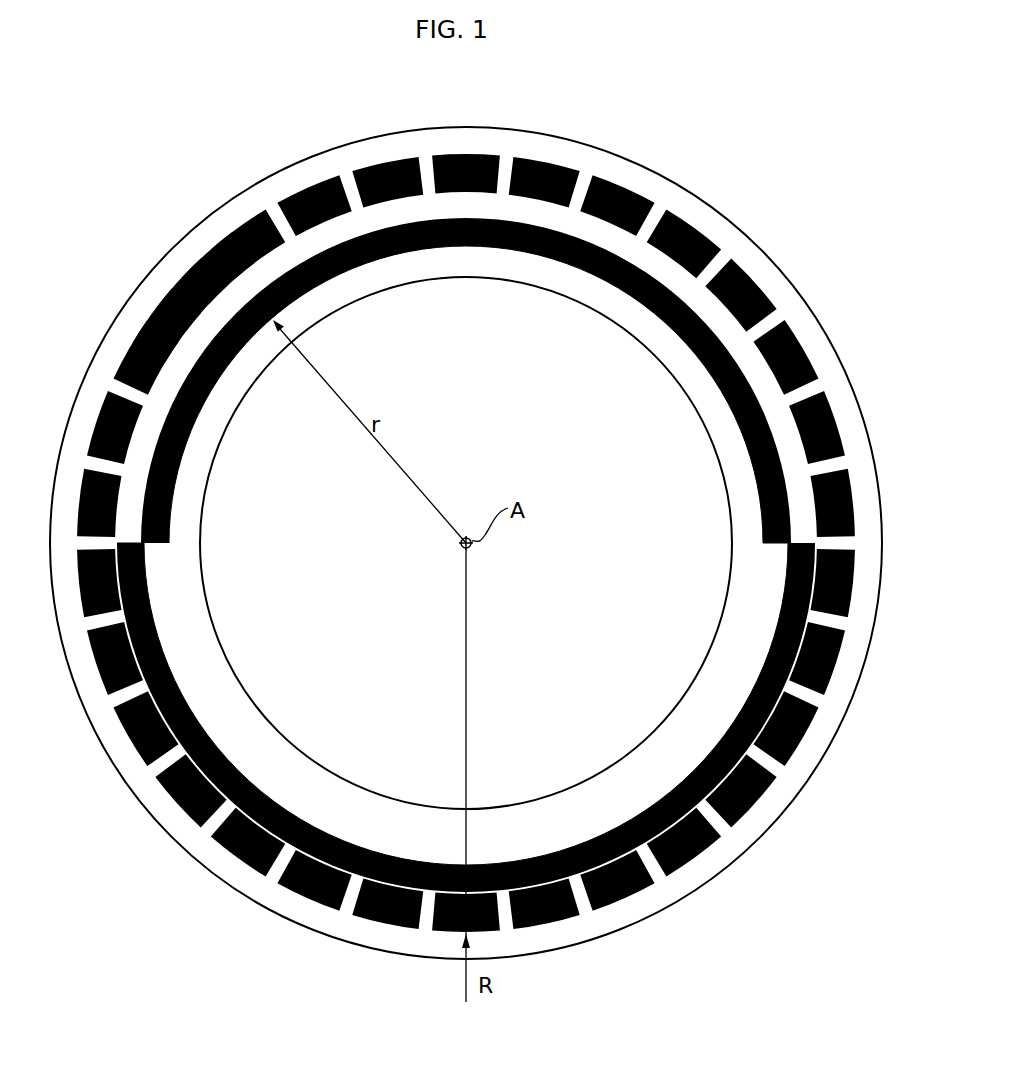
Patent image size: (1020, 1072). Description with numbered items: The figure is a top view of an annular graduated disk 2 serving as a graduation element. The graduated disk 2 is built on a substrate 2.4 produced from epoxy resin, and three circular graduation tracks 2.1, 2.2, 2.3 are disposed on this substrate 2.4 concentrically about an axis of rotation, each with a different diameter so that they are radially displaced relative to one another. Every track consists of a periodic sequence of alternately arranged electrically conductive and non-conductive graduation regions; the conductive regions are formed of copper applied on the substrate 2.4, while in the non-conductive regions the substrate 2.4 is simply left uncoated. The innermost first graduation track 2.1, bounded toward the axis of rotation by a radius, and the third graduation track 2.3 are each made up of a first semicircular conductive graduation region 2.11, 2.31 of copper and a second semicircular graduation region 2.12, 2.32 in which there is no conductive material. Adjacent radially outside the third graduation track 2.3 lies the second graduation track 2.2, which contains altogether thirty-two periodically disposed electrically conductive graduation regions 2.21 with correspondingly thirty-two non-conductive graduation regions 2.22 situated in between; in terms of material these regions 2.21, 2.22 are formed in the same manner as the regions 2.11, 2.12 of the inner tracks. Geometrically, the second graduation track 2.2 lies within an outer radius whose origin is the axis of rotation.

The graduated disk 2 is at (205, 207).
The first graduation track 2.1 is at (757, 541).
The electrically conductive graduation region of the first graduation track 2.11 is at (748, 453).
The non-conductive graduation region of the first graduation track 2.12 is at (768, 578).
The second graduation track 2.2 is at (221, 247).
The electrically conductive graduation regions of the second graduation track 2.21 is at (145, 323).
The non-conductive graduation regions of the second graduation track 2.22 is at (168, 302).
The third graduation track 2.3 is at (163, 647).
The electrically conductive graduation region of the third graduation track 2.31 is at (197, 727).
The non-conductive graduation region of the third graduation track 2.32 is at (140, 547).
The substrate 2.4 is at (543, 844).